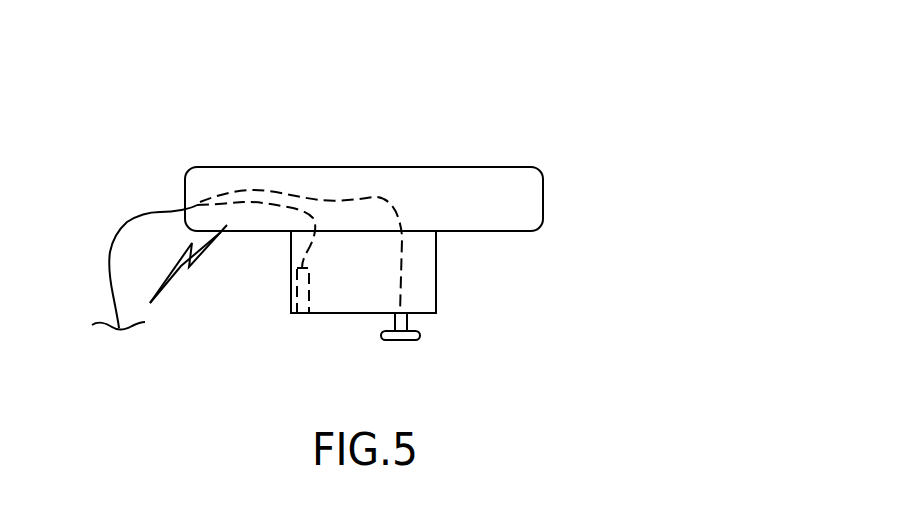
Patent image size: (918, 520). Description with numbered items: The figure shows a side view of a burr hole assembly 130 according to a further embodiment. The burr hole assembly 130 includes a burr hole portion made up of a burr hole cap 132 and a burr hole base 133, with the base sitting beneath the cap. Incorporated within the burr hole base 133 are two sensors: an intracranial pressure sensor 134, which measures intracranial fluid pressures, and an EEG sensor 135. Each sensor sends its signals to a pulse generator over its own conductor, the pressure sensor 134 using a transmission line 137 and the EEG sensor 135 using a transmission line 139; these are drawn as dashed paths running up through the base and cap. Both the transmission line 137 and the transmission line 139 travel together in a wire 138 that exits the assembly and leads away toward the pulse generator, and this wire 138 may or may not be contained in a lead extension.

The burr hole assembly 130 is at (536, 114).
The burr hole cap 132 is at (543, 199).
The burr hole base 133 is at (436, 273).
The intracranial pressure sensor 134 is at (291, 295).
The EEG sensor 135 is at (398, 340).
The transmission line 137 is at (243, 203).
The wire 138 is at (127, 222).
The transmission line 139 is at (373, 197).